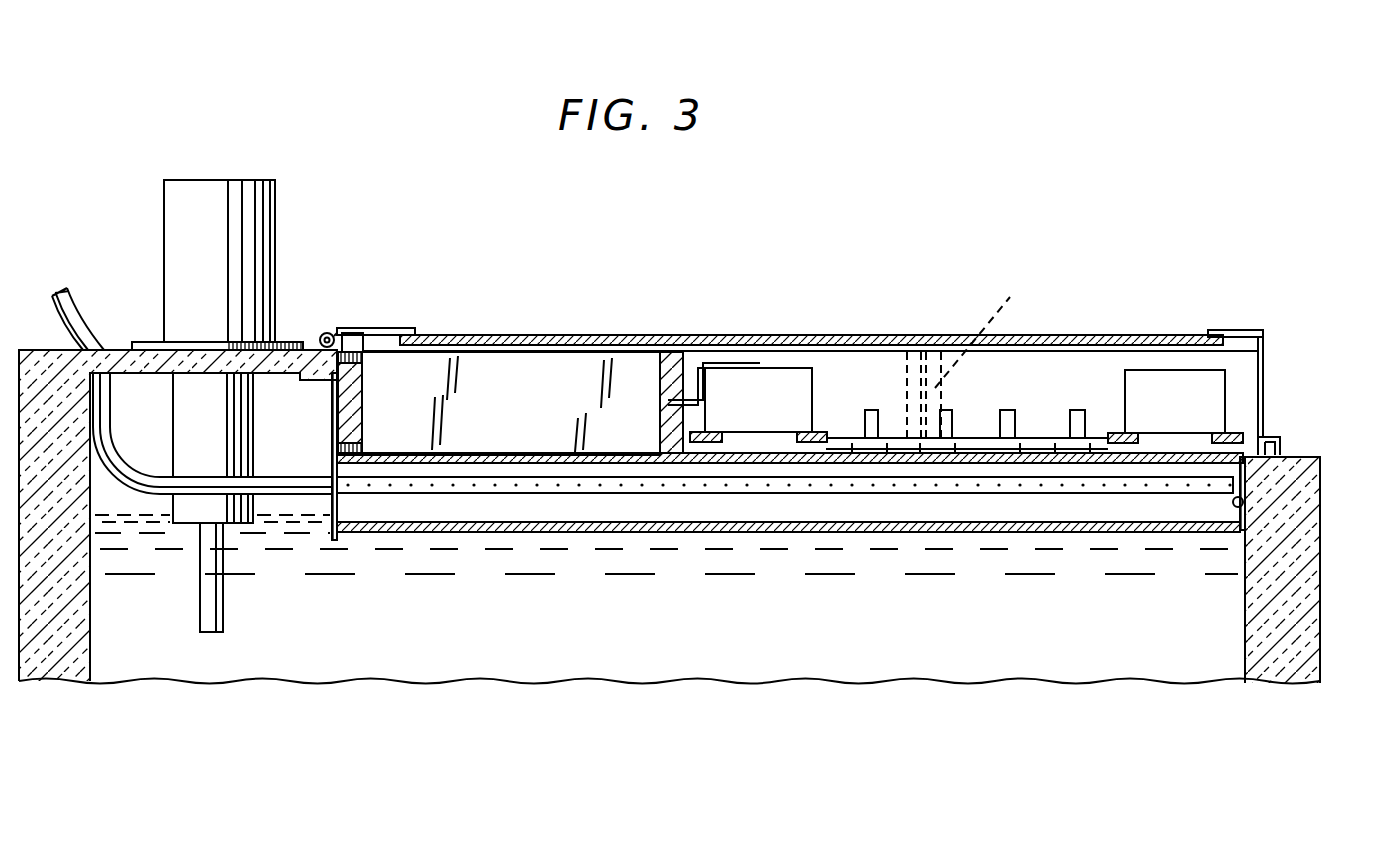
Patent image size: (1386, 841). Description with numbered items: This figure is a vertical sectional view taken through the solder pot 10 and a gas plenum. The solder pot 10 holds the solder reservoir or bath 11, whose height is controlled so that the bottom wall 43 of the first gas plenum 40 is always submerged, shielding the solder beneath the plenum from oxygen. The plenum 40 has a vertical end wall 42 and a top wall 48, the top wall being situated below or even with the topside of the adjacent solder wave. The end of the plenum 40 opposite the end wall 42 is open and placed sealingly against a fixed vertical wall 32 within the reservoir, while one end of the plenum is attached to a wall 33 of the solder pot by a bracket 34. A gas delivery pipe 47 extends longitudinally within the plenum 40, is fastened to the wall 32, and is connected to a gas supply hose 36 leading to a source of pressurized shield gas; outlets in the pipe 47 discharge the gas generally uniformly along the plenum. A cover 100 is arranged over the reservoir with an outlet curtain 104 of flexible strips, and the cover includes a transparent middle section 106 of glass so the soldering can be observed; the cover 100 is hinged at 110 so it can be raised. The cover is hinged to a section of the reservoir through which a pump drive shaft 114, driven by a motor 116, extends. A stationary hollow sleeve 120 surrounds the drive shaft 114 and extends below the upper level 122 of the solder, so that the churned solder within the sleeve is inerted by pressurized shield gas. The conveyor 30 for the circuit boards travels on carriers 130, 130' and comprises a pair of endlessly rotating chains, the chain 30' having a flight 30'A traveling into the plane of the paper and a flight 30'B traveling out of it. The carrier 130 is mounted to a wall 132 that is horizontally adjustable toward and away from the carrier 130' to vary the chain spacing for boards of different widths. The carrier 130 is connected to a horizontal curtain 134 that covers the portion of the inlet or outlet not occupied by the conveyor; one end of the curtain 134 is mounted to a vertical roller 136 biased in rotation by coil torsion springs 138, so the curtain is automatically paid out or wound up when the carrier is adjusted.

The solder pot 10 is at (1320, 560).
The solder reservoir or bath 11 is at (986, 672).
The conveyor 30 is at (939, 354).
The conveyor chain 30' is at (765, 447).
The flight of conveyor chain 30'A is at (786, 534).
The flight of conveyor chain 30'B is at (687, 534).
The fixed vertical wall 32 is at (336, 542).
The wall of the solder pot 33 is at (1303, 641).
The bracket 34 is at (1282, 440).
The gas supply hose 36 is at (82, 303).
The first gas plenum 40 is at (1033, 438).
The vertical end wall 42 is at (1244, 505).
The bottom wall 43 is at (547, 530).
The gas delivery pipe 47 is at (958, 496).
The top wall 48 is at (1057, 340).
The cover 100 is at (415, 333).
The outlet curtain 104 is at (996, 330).
The transparent middle section 106 is at (862, 336).
The hinge 110 is at (332, 324).
The pump drive shaft 114 is at (200, 603).
The motor 116 is at (280, 204).
The stationary hollow sleeve 120 is at (262, 402).
The upper level of solder 122 is at (292, 503).
The carrier 130 is at (755, 345).
The carrier 130' is at (1183, 351).
The wall 132 is at (690, 358).
The horizontal curtain 134 is at (520, 360).
The vertical roller 136 is at (360, 412).
The coil torsion springs 138 is at (384, 360).